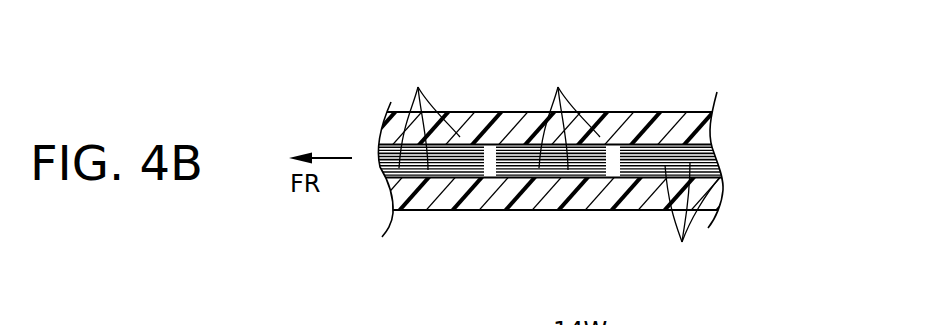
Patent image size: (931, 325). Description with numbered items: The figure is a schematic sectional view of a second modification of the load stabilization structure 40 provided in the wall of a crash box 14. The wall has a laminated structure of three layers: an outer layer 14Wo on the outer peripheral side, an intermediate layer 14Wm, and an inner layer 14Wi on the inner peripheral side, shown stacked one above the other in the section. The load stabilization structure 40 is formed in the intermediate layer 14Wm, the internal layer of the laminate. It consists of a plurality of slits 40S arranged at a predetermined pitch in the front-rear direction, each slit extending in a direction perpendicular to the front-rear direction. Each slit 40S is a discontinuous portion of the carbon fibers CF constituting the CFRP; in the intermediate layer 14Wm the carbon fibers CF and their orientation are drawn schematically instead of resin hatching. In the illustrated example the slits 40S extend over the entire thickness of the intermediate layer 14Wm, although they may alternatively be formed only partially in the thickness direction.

The crash box 14 is at (748, 84).
The outer layer 14Wo is at (664, 111).
The intermediate layer 14Wm is at (437, 160).
The inner layer 14Wi is at (547, 200).
The slits 40S is at (491, 146).
The load stabilization structure 40 is at (731, 163).
The carbon fibers CF is at (418, 87).